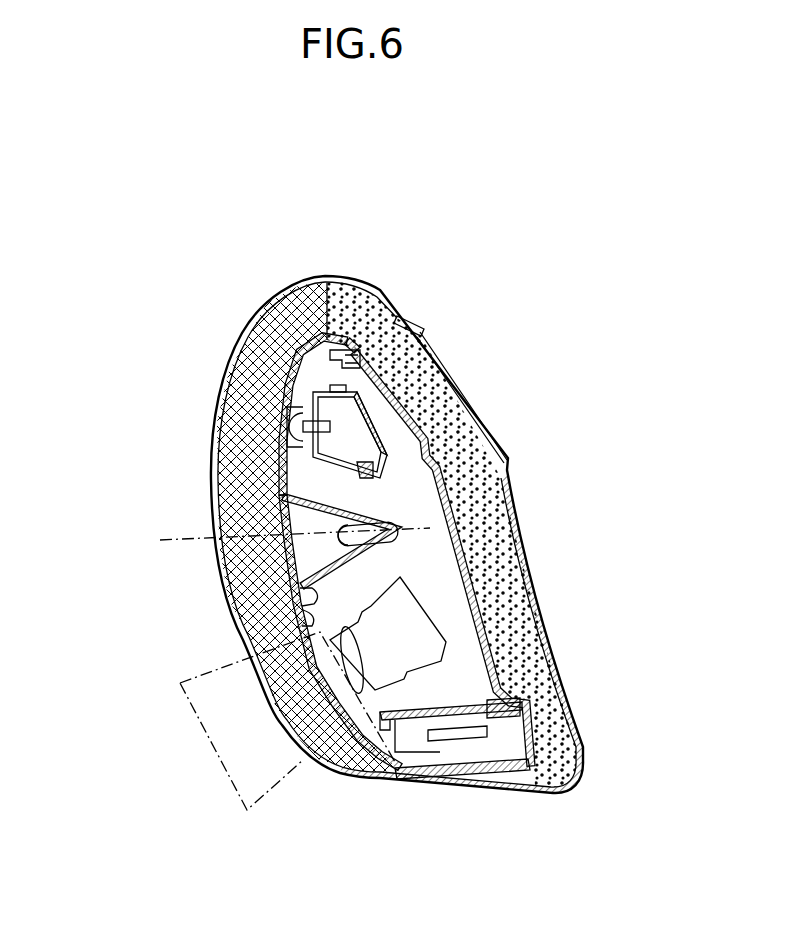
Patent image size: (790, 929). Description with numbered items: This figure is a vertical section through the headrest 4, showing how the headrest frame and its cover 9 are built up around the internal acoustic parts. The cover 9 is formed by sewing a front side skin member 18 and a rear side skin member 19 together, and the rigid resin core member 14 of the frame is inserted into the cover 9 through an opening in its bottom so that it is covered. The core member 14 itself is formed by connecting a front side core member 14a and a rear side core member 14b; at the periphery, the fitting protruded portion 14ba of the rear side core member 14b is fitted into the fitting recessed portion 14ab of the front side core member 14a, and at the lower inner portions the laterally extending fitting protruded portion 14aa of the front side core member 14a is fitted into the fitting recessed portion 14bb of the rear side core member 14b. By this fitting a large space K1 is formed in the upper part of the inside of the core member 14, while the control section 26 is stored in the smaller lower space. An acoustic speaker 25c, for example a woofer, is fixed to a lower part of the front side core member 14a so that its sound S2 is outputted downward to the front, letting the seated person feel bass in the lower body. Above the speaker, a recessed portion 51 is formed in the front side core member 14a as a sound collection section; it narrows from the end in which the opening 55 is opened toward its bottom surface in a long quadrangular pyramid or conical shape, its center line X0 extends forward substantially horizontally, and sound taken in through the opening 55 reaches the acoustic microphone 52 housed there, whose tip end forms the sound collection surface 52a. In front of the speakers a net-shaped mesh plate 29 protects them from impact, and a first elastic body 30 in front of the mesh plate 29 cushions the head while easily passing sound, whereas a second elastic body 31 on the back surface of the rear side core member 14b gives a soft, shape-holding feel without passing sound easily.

The headrest 4 is at (154, 244).
The cover 9 is at (437, 136).
The front side skin member 18 is at (267, 288).
The rear side skin member 19 is at (383, 283).
The core member 14 is at (632, 233).
The front side core member 14a is at (424, 332).
The fitting recessed portion 14ab is at (440, 395).
The fitting protruded portion 14ba is at (362, 363).
The rear side core member 14b is at (462, 573).
The fitting recessed portion 14bb is at (533, 738).
The fitting protruded portion 14aa is at (470, 717).
The large space K1 is at (404, 441).
The mesh plate 29 is at (262, 402).
The first elastic body 30 is at (265, 618).
The second elastic body 31 is at (520, 634).
The opening 55 is at (320, 584).
The center line X0 is at (277, 539).
The sound collection surface 52a is at (330, 516).
The acoustic microphone 52 is at (355, 540).
The recessed portion 51 is at (318, 572).
The acoustic speaker 25c is at (418, 650).
The control section 26 is at (400, 778).
The sound S2 is at (257, 721).